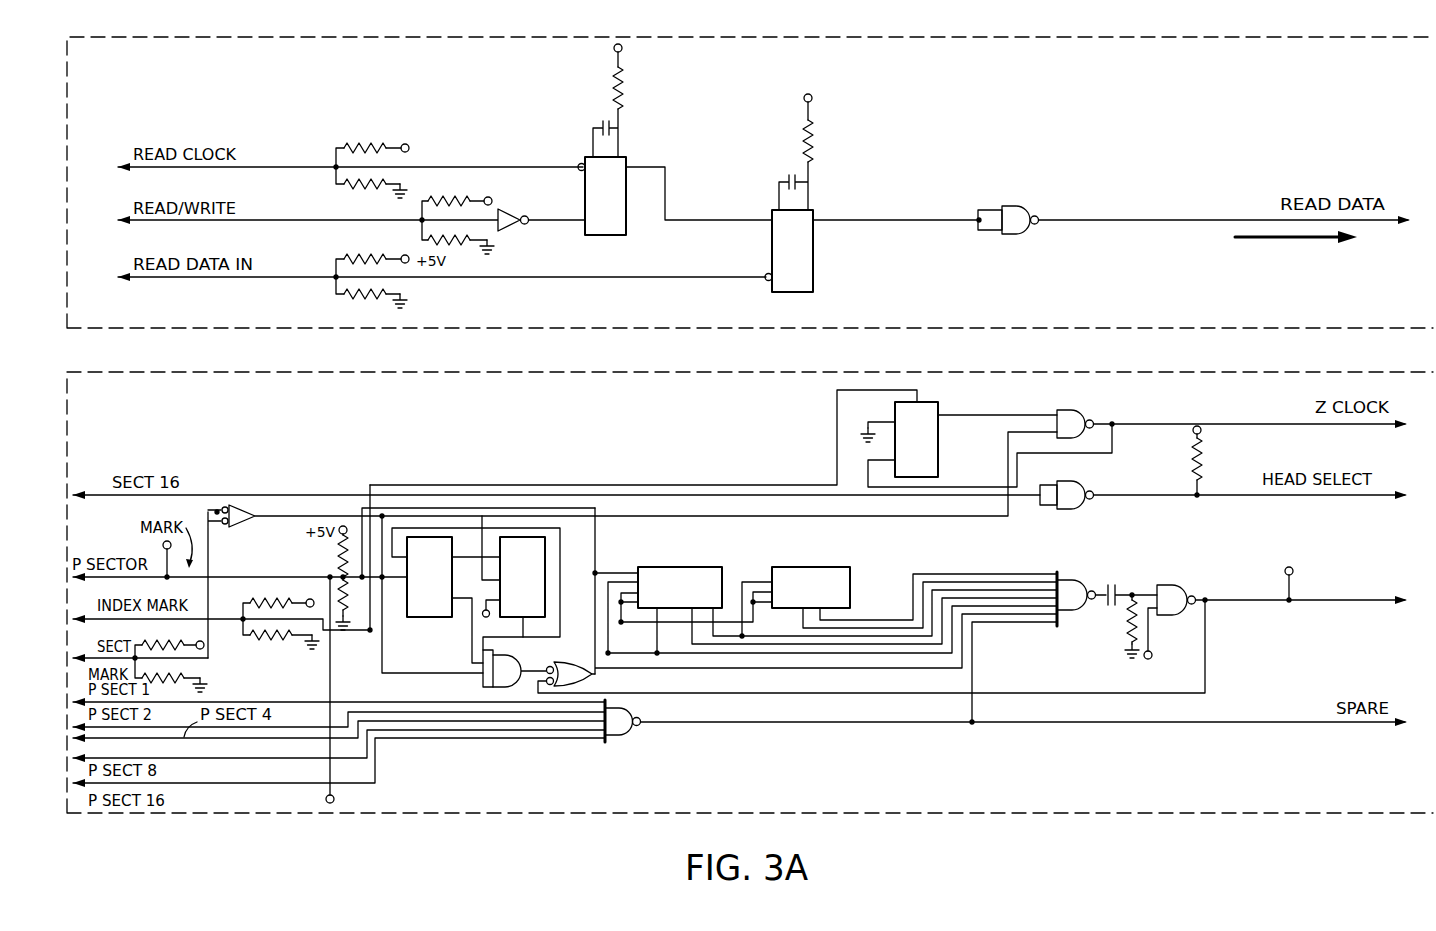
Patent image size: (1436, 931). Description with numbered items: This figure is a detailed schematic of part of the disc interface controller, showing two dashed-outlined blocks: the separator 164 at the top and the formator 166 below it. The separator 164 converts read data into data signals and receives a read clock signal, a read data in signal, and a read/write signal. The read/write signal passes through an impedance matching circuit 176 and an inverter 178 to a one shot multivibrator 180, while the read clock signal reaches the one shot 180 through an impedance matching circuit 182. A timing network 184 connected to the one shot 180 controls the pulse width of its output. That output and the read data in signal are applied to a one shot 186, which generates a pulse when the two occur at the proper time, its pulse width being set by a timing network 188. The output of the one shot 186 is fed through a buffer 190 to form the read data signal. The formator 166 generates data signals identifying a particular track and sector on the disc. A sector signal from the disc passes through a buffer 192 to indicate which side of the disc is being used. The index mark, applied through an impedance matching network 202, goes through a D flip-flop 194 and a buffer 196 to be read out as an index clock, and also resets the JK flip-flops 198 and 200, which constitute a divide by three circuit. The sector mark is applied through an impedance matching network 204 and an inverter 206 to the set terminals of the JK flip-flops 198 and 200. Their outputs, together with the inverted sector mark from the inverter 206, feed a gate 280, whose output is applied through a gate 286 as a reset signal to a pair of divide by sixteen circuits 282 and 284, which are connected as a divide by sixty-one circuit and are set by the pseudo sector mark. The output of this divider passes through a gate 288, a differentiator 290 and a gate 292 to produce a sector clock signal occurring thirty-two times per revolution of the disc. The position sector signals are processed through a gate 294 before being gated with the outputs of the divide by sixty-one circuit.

The separator 164 is at (256, 328).
The formator 166 is at (548, 372).
The impedance matching circuit 176 is at (492, 198).
The inverter 178 is at (510, 229).
The one shot multivibrator 180 is at (621, 235).
The impedance matching circuit 182 is at (357, 146).
The timing network 184 is at (594, 122).
The one shot 186 is at (813, 273).
The timing network 188 is at (781, 176).
The buffer 190 is at (1012, 236).
The buffer 192 is at (1080, 484).
The D flip-flop 194 is at (940, 412).
The buffer 196 is at (1080, 410).
The JK flip-flop 198 is at (435, 618).
The JK flip-flop 200 is at (547, 568).
The impedance matching network 202 is at (229, 610).
The impedance matching network 204 is at (182, 668).
The inverter 206 is at (244, 509).
The gate 280 is at (503, 656).
The divide by sixteen circuit 282 is at (673, 567).
The divide by sixteen circuit 284 is at (797, 567).
The gate 286 is at (594, 681).
The gate 288 is at (1072, 580).
The differentiator 290 is at (1138, 586).
The gate 292 is at (1187, 587).
The gate 294 is at (618, 742).